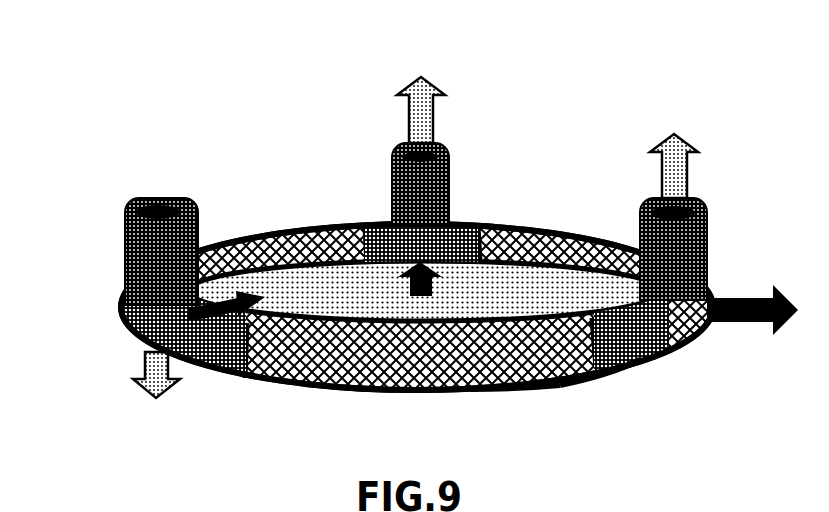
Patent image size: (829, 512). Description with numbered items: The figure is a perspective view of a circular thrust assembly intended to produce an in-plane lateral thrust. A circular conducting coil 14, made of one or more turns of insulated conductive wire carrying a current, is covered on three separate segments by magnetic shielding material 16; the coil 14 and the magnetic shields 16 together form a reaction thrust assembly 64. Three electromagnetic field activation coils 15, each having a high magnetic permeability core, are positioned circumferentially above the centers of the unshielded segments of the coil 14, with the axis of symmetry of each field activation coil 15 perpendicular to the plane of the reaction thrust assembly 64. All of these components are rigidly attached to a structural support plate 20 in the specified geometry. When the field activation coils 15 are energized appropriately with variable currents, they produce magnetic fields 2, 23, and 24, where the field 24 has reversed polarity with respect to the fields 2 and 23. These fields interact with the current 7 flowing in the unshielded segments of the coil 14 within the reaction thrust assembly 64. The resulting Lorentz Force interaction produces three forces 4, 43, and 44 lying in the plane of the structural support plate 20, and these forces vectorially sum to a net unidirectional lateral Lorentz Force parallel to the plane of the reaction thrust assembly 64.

The magnetic field 2 is at (676, 134).
The force 4 is at (748, 298).
The current 7 is at (462, 225).
The circular conducting coil 14 is at (683, 345).
The electromagnetic field activation coils 15 is at (127, 203).
The magnetic shielding material 16 is at (293, 222).
The structural support plate 20 is at (606, 378).
The magnetic field 23 is at (432, 122).
The magnetic field 24 is at (142, 372).
The force 43 is at (438, 281).
The force 44 is at (268, 297).
The reaction thrust assembly 64 is at (520, 402).